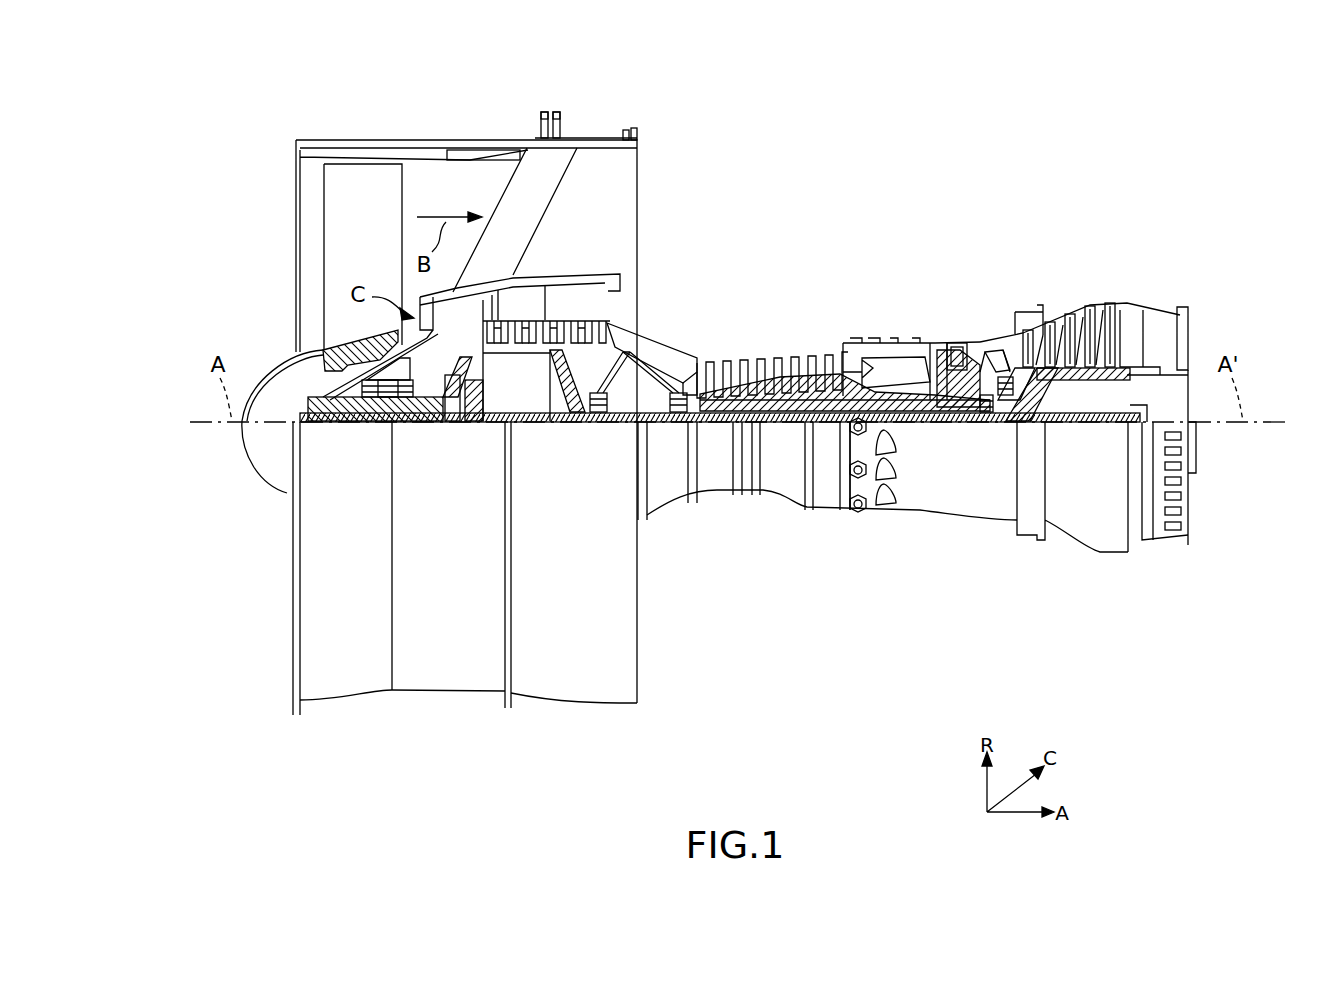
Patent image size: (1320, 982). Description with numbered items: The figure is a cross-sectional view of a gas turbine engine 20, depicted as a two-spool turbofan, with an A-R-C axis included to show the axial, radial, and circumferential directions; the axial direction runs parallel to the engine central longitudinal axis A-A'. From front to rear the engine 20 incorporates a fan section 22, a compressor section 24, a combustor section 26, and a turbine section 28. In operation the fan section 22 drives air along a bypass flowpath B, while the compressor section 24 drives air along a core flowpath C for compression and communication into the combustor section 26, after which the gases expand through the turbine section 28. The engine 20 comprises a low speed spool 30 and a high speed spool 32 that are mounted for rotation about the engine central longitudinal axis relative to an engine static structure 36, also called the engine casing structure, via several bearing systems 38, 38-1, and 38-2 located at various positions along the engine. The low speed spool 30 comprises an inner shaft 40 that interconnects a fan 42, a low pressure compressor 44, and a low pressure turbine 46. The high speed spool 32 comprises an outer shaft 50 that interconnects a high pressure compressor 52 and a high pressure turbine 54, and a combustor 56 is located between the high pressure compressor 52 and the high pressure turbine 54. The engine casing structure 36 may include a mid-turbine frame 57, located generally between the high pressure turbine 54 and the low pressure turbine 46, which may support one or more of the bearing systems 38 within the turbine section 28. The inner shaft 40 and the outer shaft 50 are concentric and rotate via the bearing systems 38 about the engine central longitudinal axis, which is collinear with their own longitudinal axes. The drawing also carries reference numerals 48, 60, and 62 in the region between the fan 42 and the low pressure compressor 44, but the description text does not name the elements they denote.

The gas turbine engine 20 is at (937, 142).
The fan section 22 is at (488, 126).
The compressor section 24 is at (510, 241).
The combustor section 26 is at (945, 241).
The turbine section 28 is at (1135, 241).
The low speed spool 30 is at (790, 438).
The high speed spool 32 is at (835, 380).
The engine static structure 36 is at (262, 724).
The bearing system 38 is at (997, 402).
The bearing system 38-1 is at (365, 420).
The bearing system 38-2 is at (585, 422).
The inner shaft 40 is at (660, 426).
The fan 42 is at (338, 264).
The low pressure compressor 44 is at (588, 332).
The low pressure turbine 46 is at (1076, 320).
The geared architecture 48 is at (464, 455).
The outer shaft 50 is at (883, 397).
The high pressure compressor 52 is at (800, 387).
The high pressure turbine 54 is at (957, 347).
The combustor 56 is at (885, 360).
The mid-turbine frame 57 is at (993, 353).
The flexible support 60 is at (496, 394).
The input coupling 62 is at (496, 373).